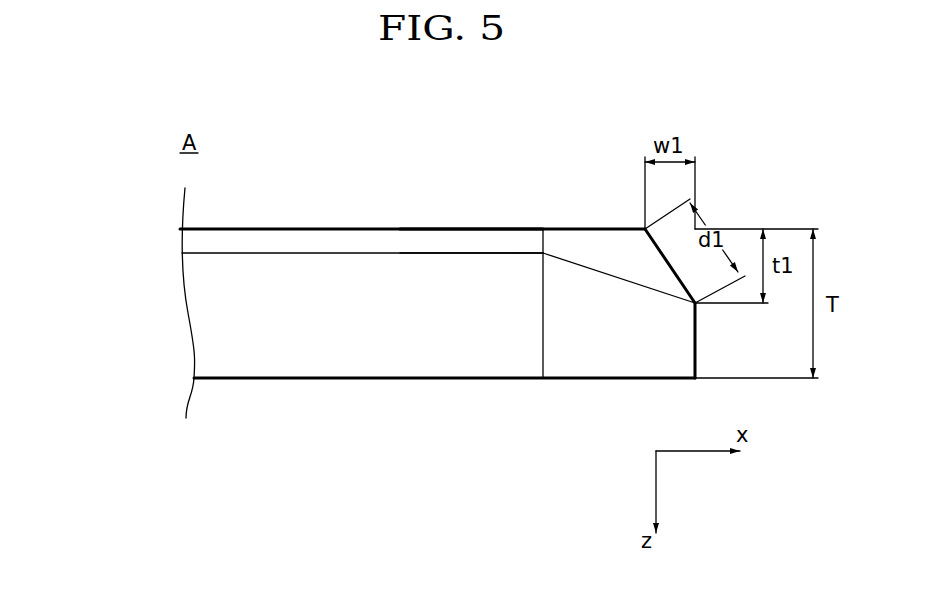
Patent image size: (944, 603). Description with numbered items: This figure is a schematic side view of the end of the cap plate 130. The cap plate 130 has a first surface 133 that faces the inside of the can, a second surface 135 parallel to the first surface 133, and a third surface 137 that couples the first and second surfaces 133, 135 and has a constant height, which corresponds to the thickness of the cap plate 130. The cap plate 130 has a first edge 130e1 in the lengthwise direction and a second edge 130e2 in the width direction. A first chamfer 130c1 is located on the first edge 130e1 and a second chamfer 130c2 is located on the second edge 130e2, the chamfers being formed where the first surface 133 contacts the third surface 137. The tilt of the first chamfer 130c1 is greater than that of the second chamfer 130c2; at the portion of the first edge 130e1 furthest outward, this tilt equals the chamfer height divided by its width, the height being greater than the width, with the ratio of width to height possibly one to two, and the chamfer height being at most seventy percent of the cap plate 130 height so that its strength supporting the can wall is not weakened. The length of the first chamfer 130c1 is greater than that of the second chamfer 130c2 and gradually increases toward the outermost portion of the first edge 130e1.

The cap plate 130 is at (149, 163).
The second edge 130e2 is at (271, 210).
The first surface 133 is at (360, 227).
The second chamfer 130c2 is at (475, 240).
The first chamfer 130c1 is at (588, 240).
The first edge 130e1 is at (607, 210).
The third surface 137 is at (265, 313).
The second surface 135 is at (358, 378).